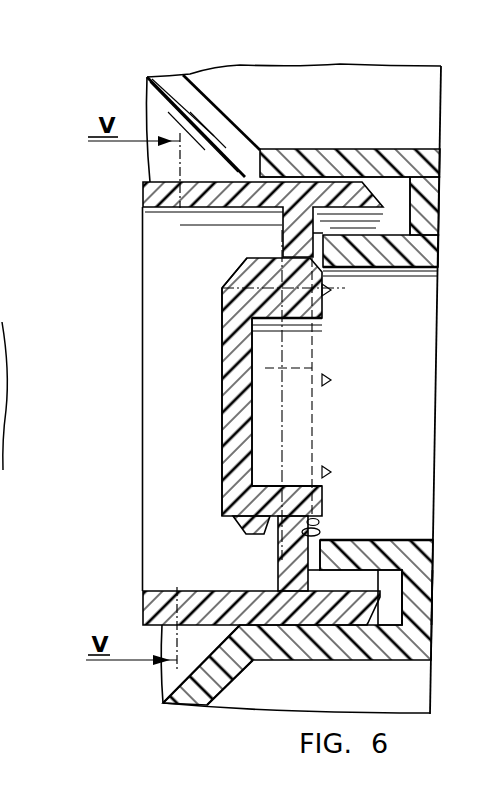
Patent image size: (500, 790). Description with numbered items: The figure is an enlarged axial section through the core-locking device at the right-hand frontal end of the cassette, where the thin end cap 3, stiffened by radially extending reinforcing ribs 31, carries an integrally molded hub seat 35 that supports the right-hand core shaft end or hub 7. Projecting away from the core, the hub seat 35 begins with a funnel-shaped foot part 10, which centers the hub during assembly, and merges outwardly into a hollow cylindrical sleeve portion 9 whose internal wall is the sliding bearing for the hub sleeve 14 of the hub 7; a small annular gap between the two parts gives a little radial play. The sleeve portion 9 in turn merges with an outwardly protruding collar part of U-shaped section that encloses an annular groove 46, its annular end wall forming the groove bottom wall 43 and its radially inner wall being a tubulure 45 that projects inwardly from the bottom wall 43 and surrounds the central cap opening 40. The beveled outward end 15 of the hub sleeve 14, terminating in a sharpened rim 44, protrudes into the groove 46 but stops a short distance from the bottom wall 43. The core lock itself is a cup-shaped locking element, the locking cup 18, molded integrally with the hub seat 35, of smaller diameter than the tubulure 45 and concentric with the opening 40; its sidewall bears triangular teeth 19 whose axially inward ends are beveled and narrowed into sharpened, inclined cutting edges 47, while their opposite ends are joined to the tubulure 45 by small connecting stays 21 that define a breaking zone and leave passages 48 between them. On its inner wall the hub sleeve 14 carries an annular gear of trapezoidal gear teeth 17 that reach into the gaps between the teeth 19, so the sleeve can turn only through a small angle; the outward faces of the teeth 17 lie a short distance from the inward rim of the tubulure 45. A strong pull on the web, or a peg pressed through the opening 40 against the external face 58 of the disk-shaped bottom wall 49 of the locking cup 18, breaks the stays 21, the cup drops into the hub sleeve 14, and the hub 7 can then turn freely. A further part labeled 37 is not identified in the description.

The end cap 3 is at (240, 112).
The core shaft end or hub 7 is at (140, 171).
The hollow cylindrical sleeve portion 9 is at (345, 626).
The funnel-shaped foot part 10 is at (230, 690).
The hub sleeve 14 is at (205, 600).
The outward end of hub sleeve 15 is at (302, 615).
The gear teeth 17 is at (330, 262).
The locking cup 18 is at (232, 431).
The teeth 19 is at (228, 287).
The connecting stays 21 is at (352, 266).
The reinforcing ribs 31 is at (332, 82).
The hub seat 35 is at (376, 146).
The O-ring 37 is at (322, 529).
The cap opening 40 is at (428, 481).
The groove bottom wall 43 is at (417, 601).
The sharpened rim 44 is at (378, 612).
The tubulure 45 is at (388, 558).
The groove 46 is at (393, 581).
The cutting edges 47 is at (238, 265).
The passages 48 is at (319, 520).
The bottom wall of locking cup 49 is at (283, 420).
The external face 58 is at (262, 381).